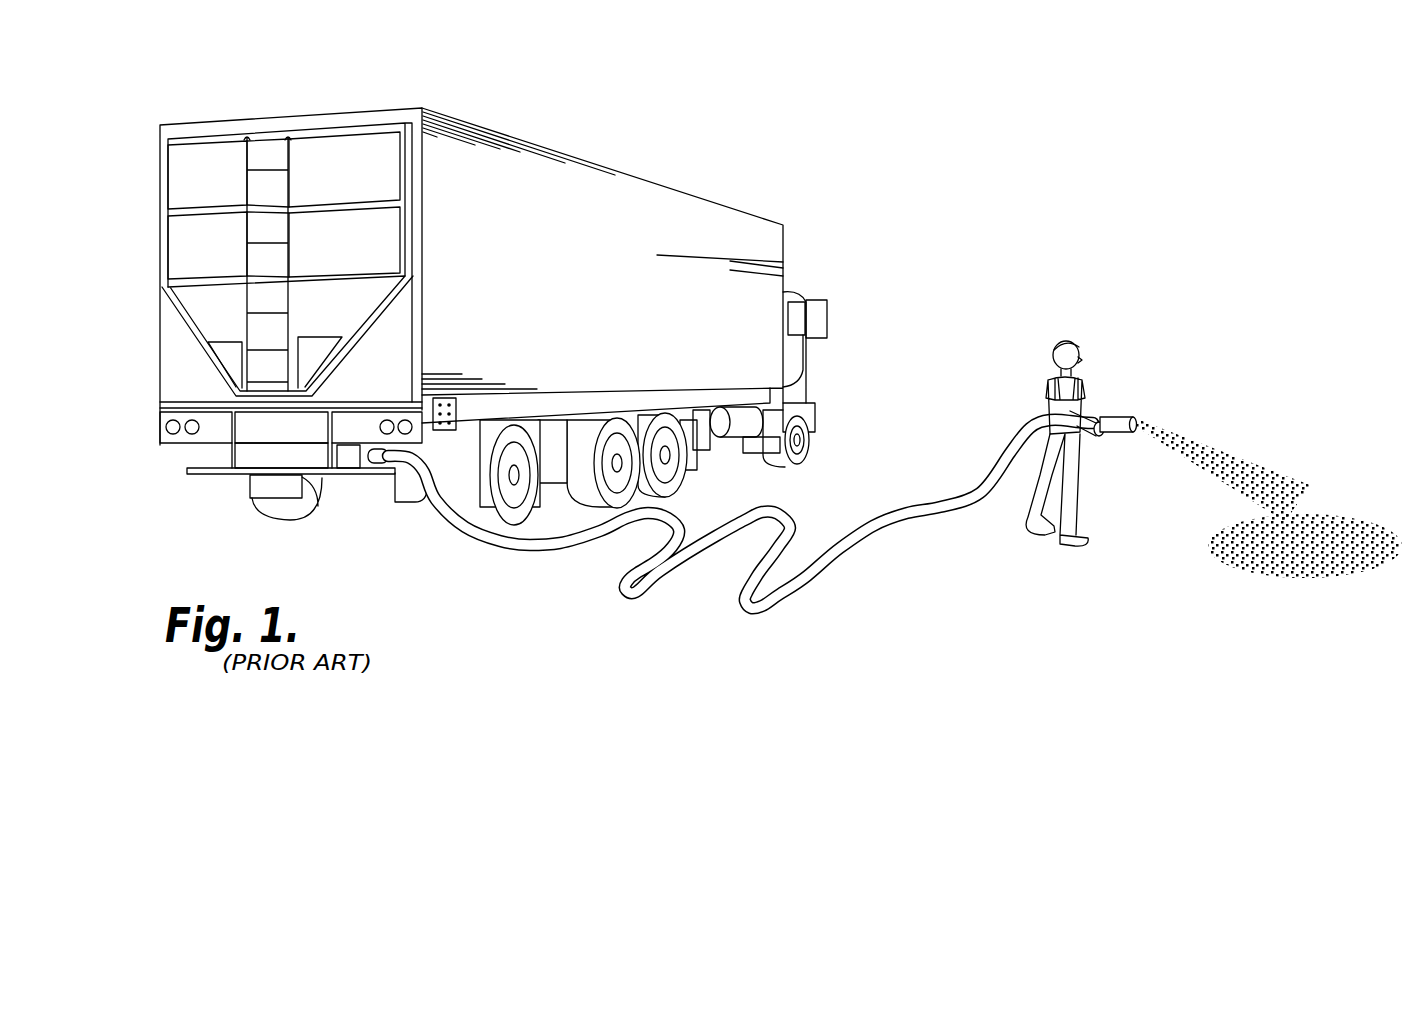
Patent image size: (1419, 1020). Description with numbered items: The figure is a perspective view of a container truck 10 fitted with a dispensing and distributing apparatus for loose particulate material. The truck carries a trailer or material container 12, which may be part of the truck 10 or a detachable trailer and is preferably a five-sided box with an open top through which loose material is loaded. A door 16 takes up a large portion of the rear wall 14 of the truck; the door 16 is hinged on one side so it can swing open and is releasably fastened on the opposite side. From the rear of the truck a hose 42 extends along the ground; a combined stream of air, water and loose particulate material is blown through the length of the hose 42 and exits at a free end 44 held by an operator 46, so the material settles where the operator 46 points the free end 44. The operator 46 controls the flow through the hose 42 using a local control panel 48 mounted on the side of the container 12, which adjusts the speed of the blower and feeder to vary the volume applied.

The container truck 10 is at (482, 338).
The trailer or material container 12 is at (638, 208).
The rear wall 14 is at (173, 372).
The door 16 is at (182, 245).
The hose 42 is at (787, 513).
The free end 44 is at (1120, 417).
The operator 46 is at (1053, 380).
The local control panel 48 is at (432, 414).